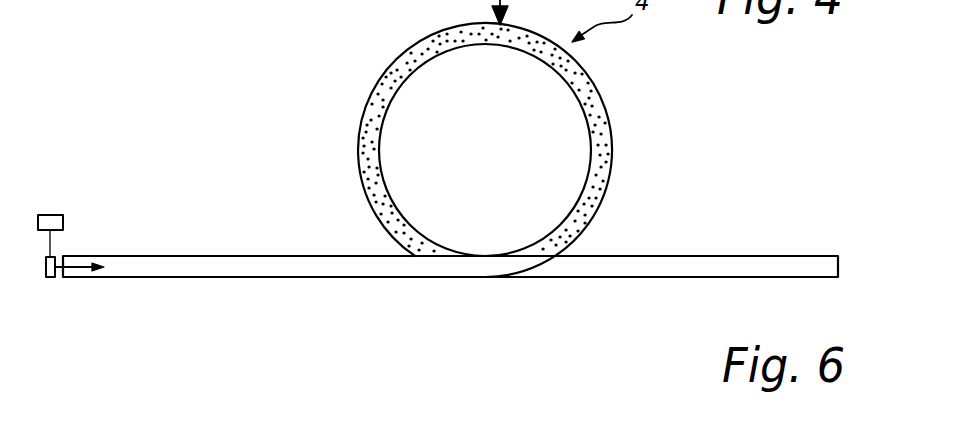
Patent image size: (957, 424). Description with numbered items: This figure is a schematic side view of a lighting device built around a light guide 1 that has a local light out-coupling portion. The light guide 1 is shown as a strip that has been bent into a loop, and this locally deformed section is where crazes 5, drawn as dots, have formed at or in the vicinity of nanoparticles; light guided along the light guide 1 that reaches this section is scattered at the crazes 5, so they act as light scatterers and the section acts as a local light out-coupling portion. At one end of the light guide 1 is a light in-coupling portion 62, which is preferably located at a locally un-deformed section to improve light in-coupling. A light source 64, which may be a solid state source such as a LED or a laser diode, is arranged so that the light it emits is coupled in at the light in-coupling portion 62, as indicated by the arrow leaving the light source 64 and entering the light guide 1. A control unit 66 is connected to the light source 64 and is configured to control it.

The light guide 1 is at (723, 267).
The crazes 5 is at (372, 91).
The light in-coupling portion 62 is at (73, 277).
The light source 64 is at (50, 275).
The control unit 66 is at (50, 215).